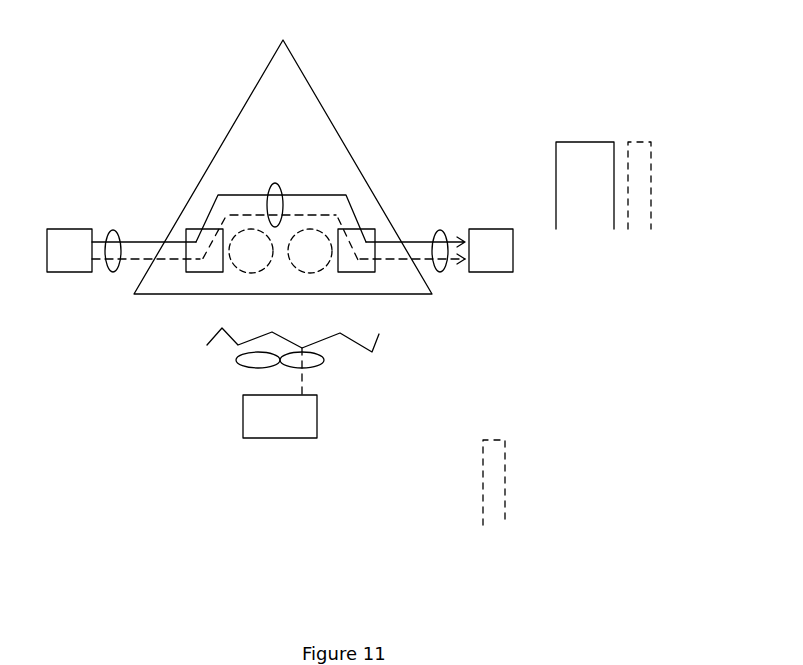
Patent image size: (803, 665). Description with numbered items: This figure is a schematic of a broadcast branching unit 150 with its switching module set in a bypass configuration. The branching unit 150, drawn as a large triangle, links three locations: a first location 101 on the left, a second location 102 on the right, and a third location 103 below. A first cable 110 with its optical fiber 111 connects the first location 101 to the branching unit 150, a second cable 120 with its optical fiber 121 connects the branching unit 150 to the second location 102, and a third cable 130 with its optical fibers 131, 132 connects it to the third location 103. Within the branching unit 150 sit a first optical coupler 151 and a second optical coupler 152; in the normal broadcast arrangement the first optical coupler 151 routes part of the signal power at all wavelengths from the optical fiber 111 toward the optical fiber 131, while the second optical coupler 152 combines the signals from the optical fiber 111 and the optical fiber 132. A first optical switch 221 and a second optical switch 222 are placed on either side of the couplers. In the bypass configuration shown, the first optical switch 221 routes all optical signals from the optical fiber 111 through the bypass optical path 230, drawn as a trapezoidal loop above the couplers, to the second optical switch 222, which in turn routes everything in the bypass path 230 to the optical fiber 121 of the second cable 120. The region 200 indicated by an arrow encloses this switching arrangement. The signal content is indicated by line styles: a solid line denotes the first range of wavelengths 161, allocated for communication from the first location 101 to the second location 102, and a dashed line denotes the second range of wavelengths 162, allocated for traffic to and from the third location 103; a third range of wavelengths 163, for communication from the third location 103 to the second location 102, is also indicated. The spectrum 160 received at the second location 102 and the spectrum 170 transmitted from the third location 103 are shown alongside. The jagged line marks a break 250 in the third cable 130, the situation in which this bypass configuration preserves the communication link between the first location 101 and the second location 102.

The first location 101 is at (62, 273).
The second location 102 is at (513, 258).
The third location 103 is at (302, 440).
The first cable 110 is at (151, 224).
The optical fiber 111 is at (115, 230).
The second cable 120 is at (412, 209).
The optical fiber 121 is at (440, 273).
The third cable 130 is at (244, 414).
The optical fiber 131 is at (237, 362).
The optical fiber 132 is at (323, 360).
The branching unit 150 is at (227, 135).
The first optical coupler 151 is at (251, 273).
The second optical coupler 152 is at (310, 273).
The spectrum 160 is at (633, 201).
The first range of wavelengths 161 is at (572, 142).
The second range of wavelengths 162 is at (638, 142).
The third range of wavelengths 163 is at (490, 438).
The spectrum 170 is at (523, 493).
The measurement region 200 is at (371, 140).
The first optical switch 221 is at (207, 273).
The second optical switch 222 is at (353, 273).
The bypass optical path 230 is at (274, 181).
The break 250 is at (372, 352).